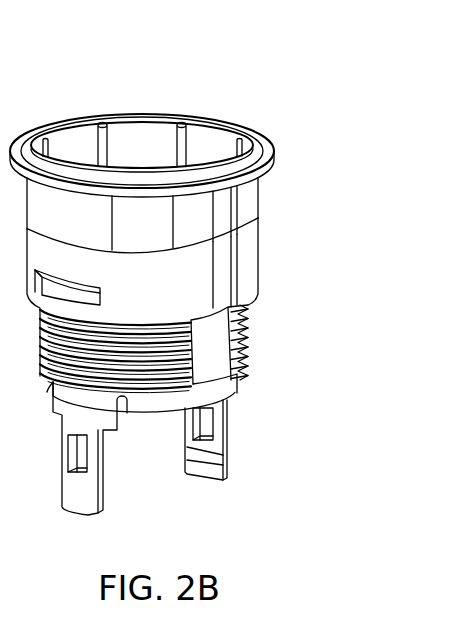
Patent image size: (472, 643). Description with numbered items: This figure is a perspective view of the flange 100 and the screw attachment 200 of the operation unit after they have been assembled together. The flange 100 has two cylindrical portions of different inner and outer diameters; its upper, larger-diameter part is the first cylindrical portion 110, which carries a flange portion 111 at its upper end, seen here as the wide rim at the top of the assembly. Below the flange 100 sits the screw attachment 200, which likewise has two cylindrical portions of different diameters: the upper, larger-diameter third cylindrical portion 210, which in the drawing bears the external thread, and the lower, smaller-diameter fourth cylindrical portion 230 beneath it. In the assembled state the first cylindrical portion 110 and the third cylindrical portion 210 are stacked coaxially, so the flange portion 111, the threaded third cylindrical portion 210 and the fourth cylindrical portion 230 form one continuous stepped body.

The flange 100 is at (171, 285).
The flange portion 111 is at (262, 150).
The first cylindrical portion 110 is at (247, 208).
The third cylindrical portion 210 is at (247, 268).
The screw attachment 200 is at (256, 321).
The fourth cylindrical portion 230 is at (232, 390).